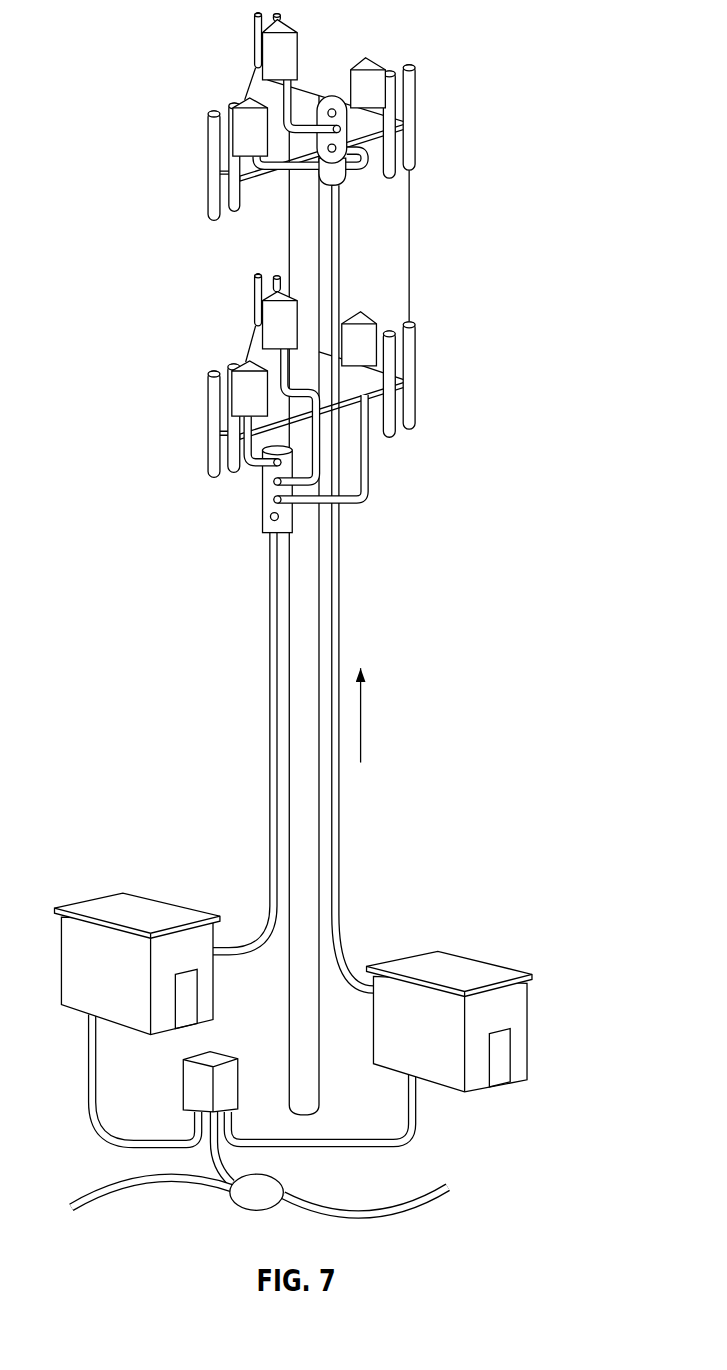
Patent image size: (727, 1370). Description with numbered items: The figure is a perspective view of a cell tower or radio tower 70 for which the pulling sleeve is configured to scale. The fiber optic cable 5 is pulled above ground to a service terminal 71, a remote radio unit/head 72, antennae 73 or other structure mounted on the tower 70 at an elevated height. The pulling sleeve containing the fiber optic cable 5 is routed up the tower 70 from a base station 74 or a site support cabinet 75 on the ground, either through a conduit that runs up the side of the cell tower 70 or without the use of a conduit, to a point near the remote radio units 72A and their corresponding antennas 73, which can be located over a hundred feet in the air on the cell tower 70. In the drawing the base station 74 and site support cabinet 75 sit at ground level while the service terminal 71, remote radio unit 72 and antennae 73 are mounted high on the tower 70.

The fiber optic cable 5 is at (343, 622).
The cell tower or radio tower 70 is at (357, 797).
The service terminal 71 is at (262, 505).
The remote radio unit/head 72 is at (420, 362).
The remote radio units 72A is at (358, 312).
The antennae 73 is at (420, 110).
The base station 74 is at (517, 962).
The site support cabinet 75 is at (233, 1048).